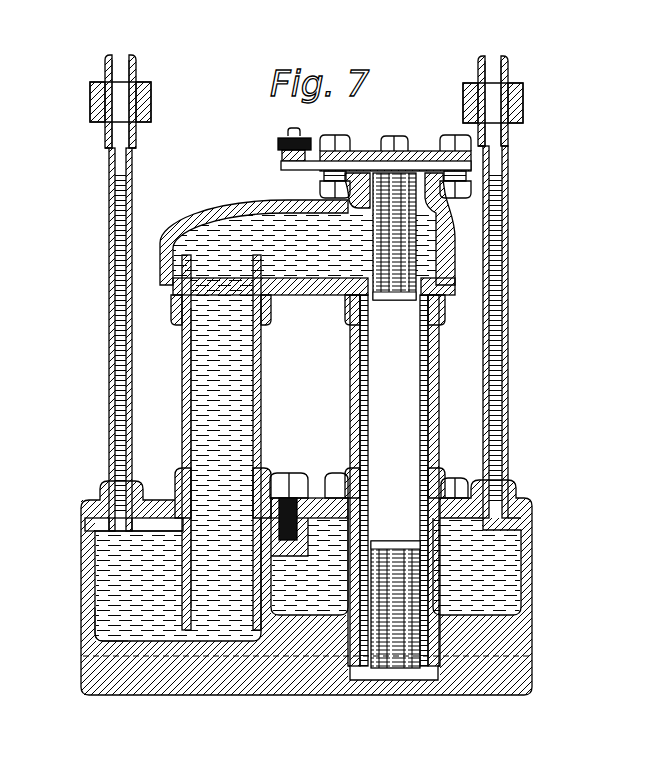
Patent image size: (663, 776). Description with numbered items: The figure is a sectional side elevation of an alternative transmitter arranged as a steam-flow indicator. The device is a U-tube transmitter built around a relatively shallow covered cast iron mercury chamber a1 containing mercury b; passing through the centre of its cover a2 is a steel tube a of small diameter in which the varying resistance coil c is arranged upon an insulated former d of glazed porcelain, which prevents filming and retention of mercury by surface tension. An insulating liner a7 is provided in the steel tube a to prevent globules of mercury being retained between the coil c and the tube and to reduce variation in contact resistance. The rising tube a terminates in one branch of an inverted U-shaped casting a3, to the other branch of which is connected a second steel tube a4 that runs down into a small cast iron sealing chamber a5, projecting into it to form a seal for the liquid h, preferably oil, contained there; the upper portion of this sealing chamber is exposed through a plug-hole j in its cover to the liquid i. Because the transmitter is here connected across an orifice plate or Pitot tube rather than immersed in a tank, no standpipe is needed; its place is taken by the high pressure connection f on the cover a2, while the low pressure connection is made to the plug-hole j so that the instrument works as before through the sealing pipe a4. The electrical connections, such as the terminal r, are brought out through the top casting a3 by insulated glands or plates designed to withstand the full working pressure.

The steel tube a is at (425, 430).
The mercury chamber a1 is at (525, 557).
The cover a2 is at (307, 485).
The inverted U-shaped casting a3 is at (262, 197).
The steel tube a4 is at (256, 418).
The sealing chamber a5 is at (88, 576).
The insulating liner a7 is at (420, 398).
The mercury b is at (306, 572).
The varying resistance coil c is at (372, 228).
The insulated former d is at (407, 297).
The high pressure connection f is at (500, 330).
The liquid h is at (247, 393).
The liquid i is at (86, 608).
The plug-hole j is at (100, 516).
The terminal r is at (272, 133).